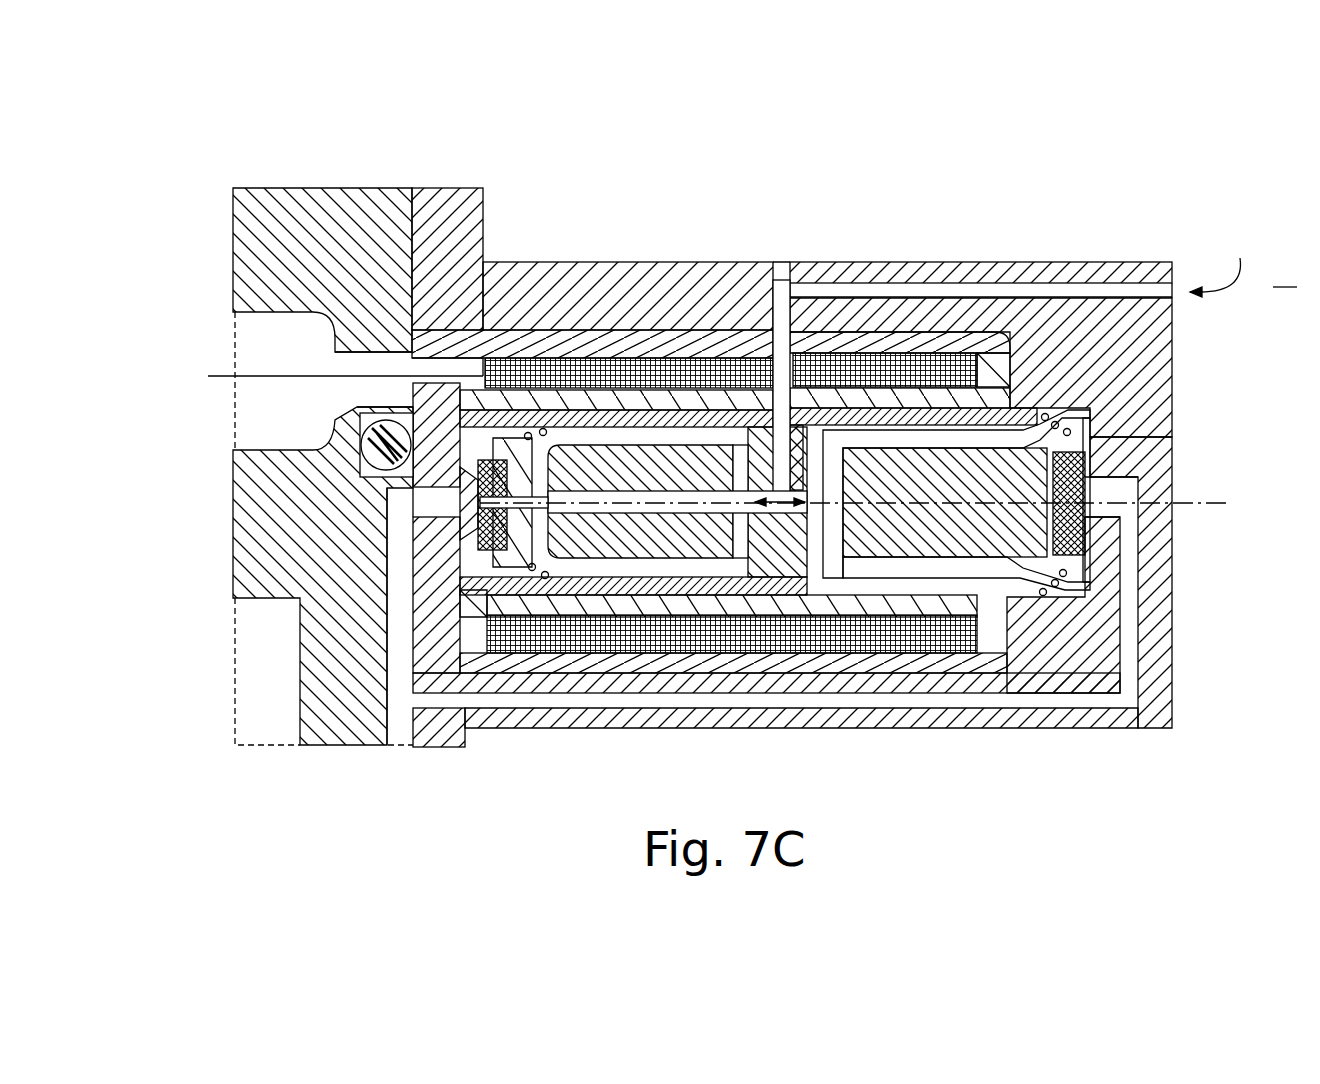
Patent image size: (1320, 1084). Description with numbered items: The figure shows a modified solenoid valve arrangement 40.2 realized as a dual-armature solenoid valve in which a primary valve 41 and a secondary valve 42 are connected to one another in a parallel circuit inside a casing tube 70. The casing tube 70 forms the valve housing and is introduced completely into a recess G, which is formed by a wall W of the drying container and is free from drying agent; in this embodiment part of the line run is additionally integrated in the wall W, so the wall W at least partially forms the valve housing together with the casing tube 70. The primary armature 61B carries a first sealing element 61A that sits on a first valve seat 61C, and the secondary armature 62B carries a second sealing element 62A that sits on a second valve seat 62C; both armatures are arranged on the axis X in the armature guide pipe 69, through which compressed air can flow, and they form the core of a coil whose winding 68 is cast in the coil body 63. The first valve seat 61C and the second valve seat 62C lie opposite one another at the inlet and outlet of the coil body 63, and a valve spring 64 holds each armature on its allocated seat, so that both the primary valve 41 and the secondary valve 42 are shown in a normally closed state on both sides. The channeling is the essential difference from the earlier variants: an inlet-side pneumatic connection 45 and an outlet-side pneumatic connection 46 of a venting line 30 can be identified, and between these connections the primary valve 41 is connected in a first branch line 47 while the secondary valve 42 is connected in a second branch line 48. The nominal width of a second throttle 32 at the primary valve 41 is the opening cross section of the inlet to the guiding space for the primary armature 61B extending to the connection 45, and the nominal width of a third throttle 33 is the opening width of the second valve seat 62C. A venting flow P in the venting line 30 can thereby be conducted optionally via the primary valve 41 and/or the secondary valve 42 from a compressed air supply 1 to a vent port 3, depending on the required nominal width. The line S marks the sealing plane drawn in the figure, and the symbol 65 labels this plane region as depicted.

The compressed air supply 1 is at (1285, 272).
The vent port 3 is at (415, 855).
The venting line 30 is at (988, 305).
The second throttle 32 is at (1100, 510).
The third throttle 33 is at (400, 612).
The solenoid valve arrangement 40.2 is at (800, 198).
The primary valve 41 is at (1047, 262).
The secondary valve 42 is at (505, 222).
The pneumatic connection 45 is at (837, 418).
The pneumatic connection 46 is at (398, 713).
The first branch line 47 is at (1003, 700).
The second branch line 48 is at (480, 498).
The first sealing element 61A is at (1087, 540).
The primary armature 61B is at (1093, 443).
The first valve seat 61C is at (1095, 478).
The second sealing element 62A is at (407, 313).
The secondary armature 62B is at (650, 352).
The second valve seat 62C is at (333, 407).
The coil body 63 is at (540, 400).
The valve spring 64 is at (532, 432).
The sealing line 65 is at (258, 377).
The winding 68 is at (647, 460).
The armature guide pipe 69 is at (900, 370).
The casing tube 70 is at (653, 665).
The recess G is at (781, 488).
The venting flow P is at (1220, 261).
The sealing plane S is at (344, 358).
The wall W is at (443, 213).
The axis X is at (1217, 505).